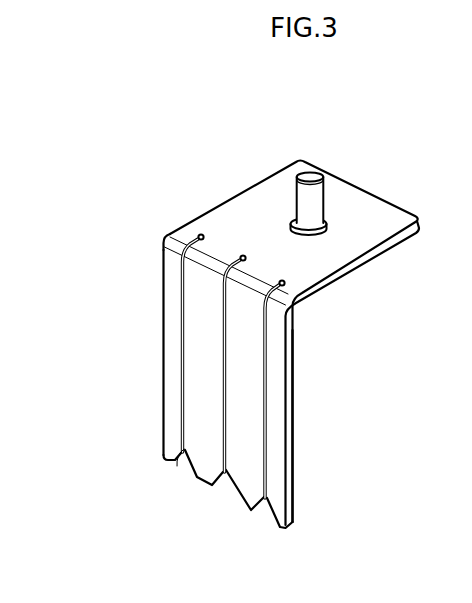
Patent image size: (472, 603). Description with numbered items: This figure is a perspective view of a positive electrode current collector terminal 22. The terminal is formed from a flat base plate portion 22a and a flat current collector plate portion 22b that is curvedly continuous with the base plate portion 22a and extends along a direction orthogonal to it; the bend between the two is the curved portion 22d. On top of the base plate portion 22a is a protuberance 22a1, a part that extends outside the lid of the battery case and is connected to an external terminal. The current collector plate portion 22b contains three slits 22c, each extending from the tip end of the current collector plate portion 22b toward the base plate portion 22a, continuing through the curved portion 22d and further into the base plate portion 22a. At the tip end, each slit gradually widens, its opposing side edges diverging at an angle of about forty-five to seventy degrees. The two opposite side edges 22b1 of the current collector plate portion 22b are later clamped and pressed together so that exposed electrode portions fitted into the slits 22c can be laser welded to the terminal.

The positive electrode current collector terminal 22 is at (147, 191).
The base plate portion 22a is at (240, 206).
The protuberance 22a1 is at (320, 202).
The current collector plate portion 22b is at (277, 462).
The side edges of the current collector plate portion 22b1 is at (163, 351).
The slits 22c is at (183, 391).
The curved portion 22d is at (166, 240).